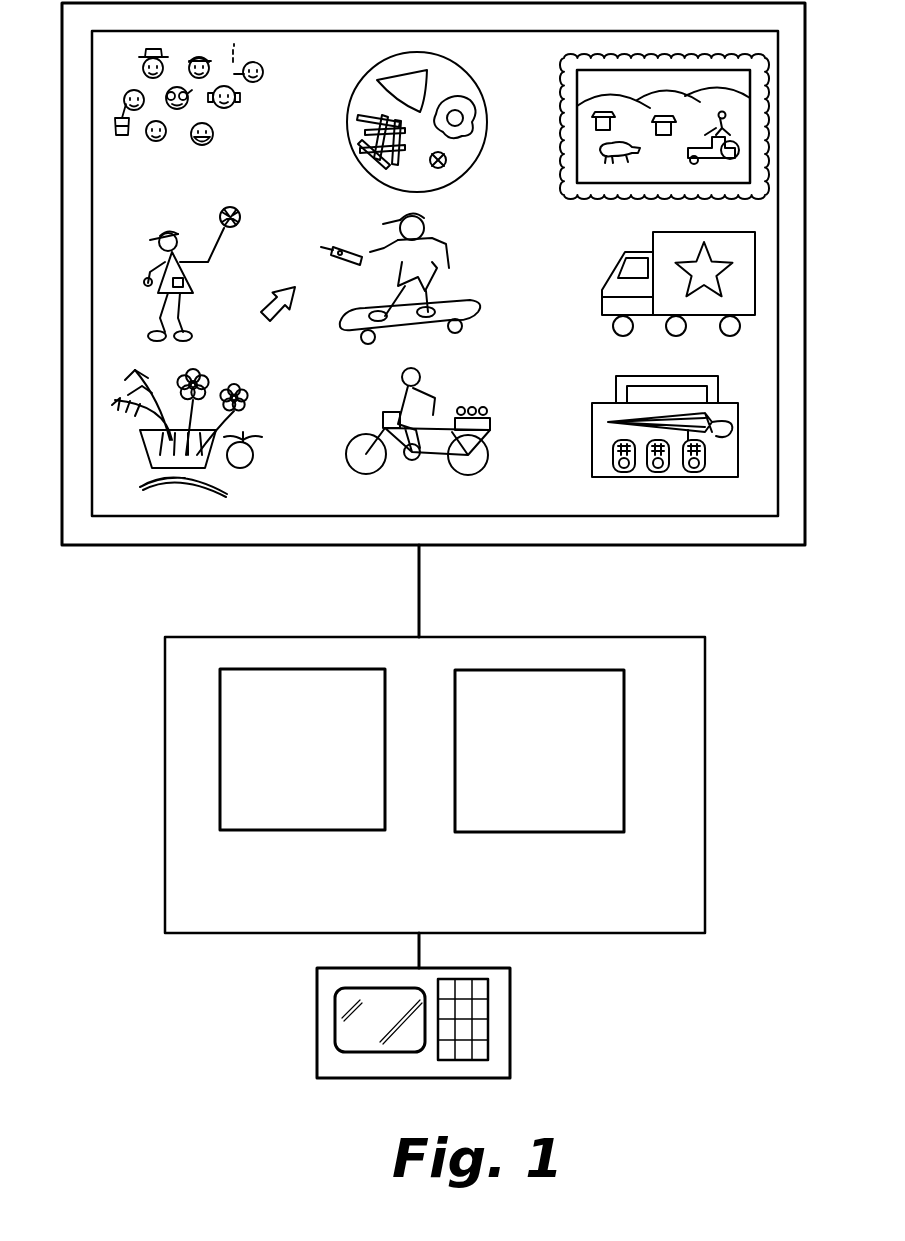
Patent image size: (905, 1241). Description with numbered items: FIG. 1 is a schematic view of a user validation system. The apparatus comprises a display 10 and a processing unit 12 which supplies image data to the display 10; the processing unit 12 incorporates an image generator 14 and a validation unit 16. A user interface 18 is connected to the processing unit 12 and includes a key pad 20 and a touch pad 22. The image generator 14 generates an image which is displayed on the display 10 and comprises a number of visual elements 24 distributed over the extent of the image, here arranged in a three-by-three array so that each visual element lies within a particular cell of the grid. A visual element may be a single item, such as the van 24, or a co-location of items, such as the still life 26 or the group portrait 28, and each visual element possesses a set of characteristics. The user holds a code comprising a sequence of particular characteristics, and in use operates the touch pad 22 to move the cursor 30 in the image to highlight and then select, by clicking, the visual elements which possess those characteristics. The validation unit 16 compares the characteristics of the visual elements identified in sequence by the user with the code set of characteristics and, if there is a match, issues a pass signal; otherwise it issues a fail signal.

The display 10 is at (143, 535).
The processing unit 12 is at (165, 742).
The image generator 14 is at (313, 825).
The validation unit 16 is at (573, 822).
The user interface 18 is at (412, 1023).
The key pad 20 is at (500, 990).
The touch pad 22 is at (350, 1031).
The visual elements 24 is at (755, 280).
The still life 26 is at (133, 452).
The group portrait 28 is at (116, 100).
The cursor 30 is at (259, 305).